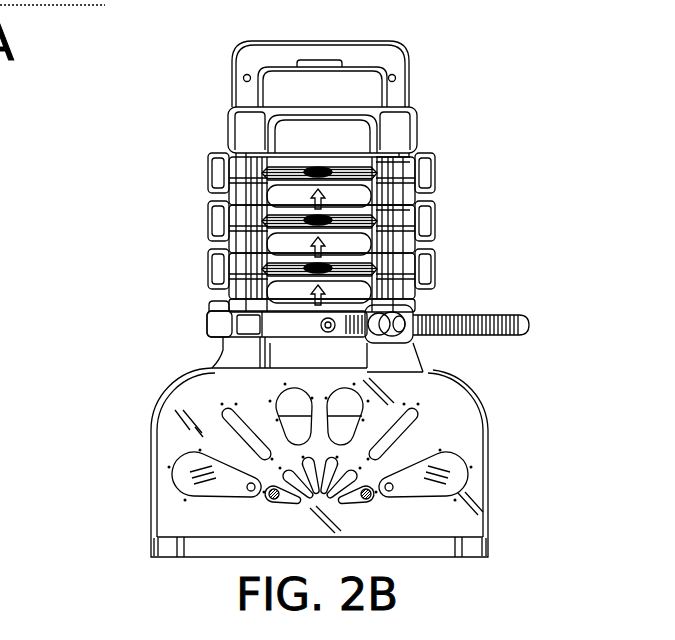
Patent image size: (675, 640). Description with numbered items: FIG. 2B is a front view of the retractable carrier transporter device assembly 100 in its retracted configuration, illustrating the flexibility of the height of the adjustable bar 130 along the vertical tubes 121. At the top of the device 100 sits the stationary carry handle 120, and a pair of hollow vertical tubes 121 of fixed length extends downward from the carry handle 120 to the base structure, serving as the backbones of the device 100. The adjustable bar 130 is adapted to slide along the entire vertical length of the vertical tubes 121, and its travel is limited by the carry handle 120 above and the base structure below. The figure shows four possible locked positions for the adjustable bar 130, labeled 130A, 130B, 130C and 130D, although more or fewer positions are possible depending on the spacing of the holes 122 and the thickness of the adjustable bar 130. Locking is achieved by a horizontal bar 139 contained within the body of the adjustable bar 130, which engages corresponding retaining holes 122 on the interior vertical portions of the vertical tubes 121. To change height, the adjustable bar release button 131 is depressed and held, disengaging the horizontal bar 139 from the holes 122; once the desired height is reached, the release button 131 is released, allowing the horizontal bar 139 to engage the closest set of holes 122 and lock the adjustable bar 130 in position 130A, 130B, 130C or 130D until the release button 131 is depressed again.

The retractable carrier transporter device assembly 100 is at (42, 260).
The stationary carry handle 120 is at (231, 124).
The vertical tubes 121 is at (403, 160).
The holes 122 is at (378, 222).
The adjustable bar 130 is at (207, 322).
The adjustable bar position 130A is at (207, 306).
The adjustable bar position 130B is at (207, 278).
The adjustable bar position 130C is at (207, 231).
The adjustable bar position 130D is at (207, 183).
The adjustable bar release button 131 is at (315, 168).
The horizontal bar 139 is at (378, 222).